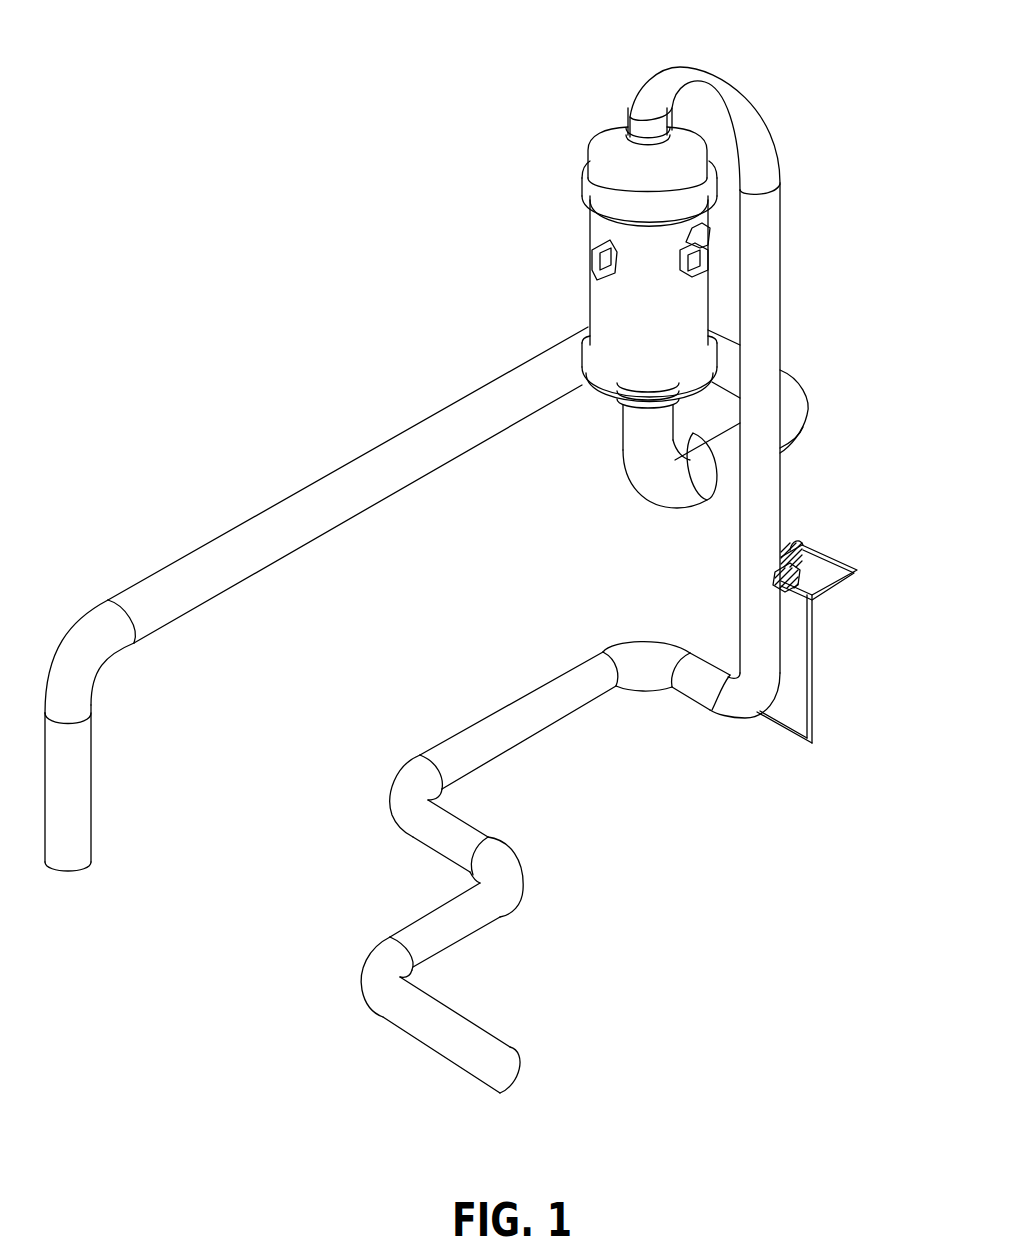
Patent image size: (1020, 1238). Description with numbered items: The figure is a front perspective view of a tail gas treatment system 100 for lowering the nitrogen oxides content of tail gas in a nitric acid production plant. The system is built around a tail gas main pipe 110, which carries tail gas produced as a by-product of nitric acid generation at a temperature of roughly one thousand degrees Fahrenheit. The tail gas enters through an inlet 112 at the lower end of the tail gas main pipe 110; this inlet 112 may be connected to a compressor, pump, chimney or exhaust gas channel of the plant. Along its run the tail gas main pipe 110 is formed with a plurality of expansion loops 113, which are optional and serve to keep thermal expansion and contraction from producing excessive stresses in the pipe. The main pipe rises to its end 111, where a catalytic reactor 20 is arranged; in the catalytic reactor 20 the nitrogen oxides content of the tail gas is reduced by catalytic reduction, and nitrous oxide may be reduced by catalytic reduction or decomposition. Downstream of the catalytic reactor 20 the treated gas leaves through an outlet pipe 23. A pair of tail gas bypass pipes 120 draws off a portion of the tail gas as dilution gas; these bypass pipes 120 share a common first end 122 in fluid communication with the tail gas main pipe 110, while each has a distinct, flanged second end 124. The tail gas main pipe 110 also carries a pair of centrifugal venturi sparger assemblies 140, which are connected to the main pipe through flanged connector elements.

The tail gas treatment system 100 is at (420, 227).
The catalytic reactor 20 is at (633, 300).
The end of tail gas main pipe 111 is at (647, 137).
The outlet pipe 23 is at (440, 430).
The tail gas main pipe 110 is at (753, 628).
The expansion loops 113 is at (667, 673).
The inlet 112 is at (512, 1067).
The tail gas bypass pipes 120 is at (833, 558).
The first end 122 is at (755, 713).
The second end 124 is at (802, 545).
The centrifugal venturi sparger assemblies 140 is at (788, 543).